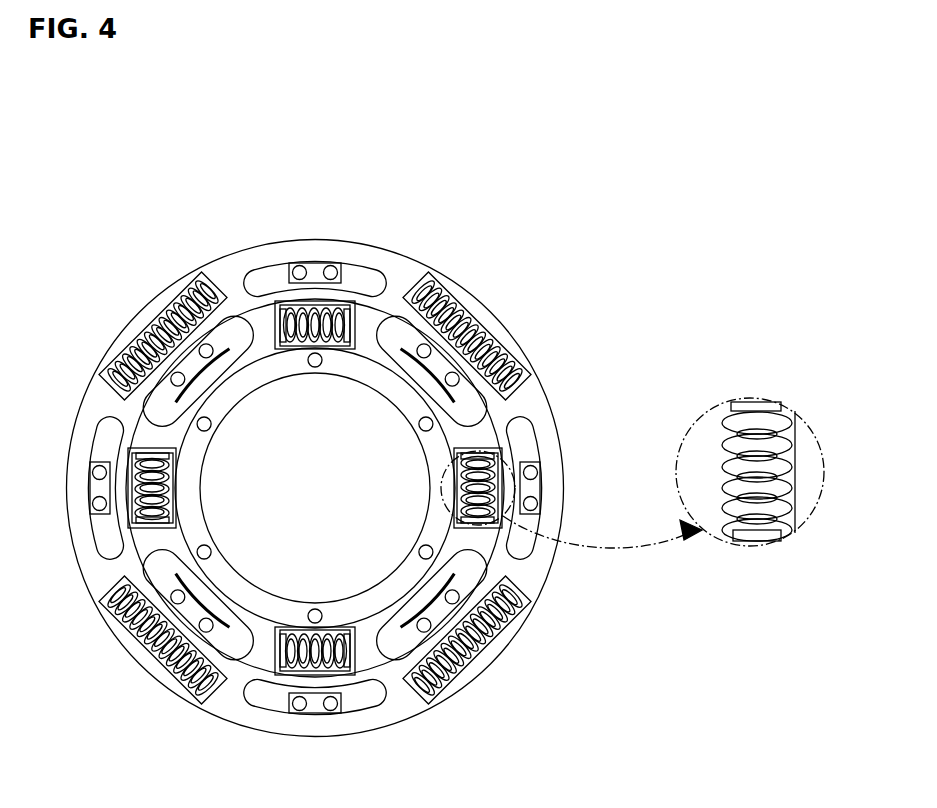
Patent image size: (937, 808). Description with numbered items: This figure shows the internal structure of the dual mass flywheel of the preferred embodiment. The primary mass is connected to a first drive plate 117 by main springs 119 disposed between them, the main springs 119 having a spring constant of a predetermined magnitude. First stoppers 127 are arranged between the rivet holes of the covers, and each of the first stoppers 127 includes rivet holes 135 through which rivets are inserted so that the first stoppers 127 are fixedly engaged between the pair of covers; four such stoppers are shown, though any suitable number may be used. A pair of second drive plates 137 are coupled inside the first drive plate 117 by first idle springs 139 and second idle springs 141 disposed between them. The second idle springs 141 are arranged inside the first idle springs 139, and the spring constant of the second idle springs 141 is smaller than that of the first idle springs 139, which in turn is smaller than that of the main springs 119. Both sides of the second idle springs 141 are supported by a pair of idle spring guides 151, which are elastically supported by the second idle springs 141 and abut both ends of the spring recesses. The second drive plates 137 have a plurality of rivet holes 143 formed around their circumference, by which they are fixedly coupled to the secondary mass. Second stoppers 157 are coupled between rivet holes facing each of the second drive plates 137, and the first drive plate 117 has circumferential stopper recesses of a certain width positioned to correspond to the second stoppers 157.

The first drive plate 117 is at (421, 262).
The main springs 119 is at (505, 395).
The first stoppers 127 is at (314, 262).
The rivet holes 135 is at (331, 265).
The second drive plates 137 is at (190, 450).
The first idle springs 139 is at (778, 413).
The second idle springs 141 is at (720, 422).
The rivet holes 143 is at (433, 416).
The idle spring guides 151 is at (733, 407).
The second stoppers 157 is at (442, 358).